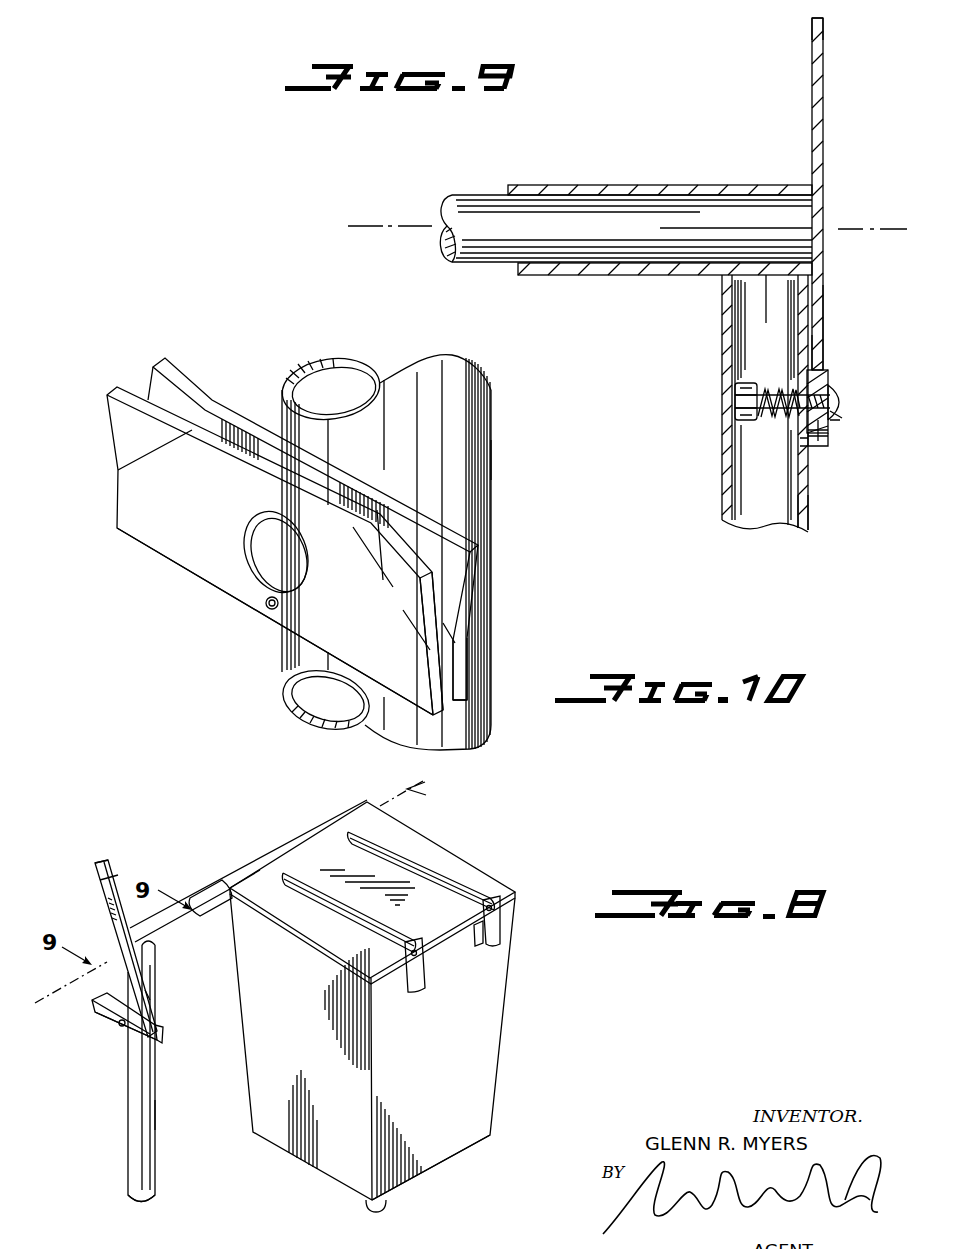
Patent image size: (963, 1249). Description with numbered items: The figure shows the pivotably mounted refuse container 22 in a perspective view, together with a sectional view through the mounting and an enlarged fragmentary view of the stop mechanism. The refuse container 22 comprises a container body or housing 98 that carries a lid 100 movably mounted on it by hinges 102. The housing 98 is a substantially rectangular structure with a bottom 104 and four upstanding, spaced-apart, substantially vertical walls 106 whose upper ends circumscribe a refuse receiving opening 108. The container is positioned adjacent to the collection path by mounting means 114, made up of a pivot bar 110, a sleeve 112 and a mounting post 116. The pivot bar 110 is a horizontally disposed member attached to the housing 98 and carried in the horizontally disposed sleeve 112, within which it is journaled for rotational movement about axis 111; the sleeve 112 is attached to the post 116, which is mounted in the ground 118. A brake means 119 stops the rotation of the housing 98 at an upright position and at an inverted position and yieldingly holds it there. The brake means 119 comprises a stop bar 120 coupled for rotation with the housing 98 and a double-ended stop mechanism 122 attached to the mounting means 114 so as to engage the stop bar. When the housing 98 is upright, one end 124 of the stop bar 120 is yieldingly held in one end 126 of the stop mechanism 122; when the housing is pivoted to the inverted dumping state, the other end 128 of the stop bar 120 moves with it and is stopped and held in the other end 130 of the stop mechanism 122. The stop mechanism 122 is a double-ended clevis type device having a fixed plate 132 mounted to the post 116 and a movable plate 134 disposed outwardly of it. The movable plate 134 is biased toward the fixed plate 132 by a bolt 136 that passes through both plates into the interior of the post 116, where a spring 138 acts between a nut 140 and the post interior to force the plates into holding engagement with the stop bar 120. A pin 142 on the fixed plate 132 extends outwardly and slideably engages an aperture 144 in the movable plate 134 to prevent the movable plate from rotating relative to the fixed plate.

In FIG. 8, the refuse container 22 is at (510, 1010).
In FIG. 8, the container body or housing 98 is at (497, 1055).
In FIG. 8, the lid 100 is at (492, 877).
In FIG. 8, the hinges 102 is at (480, 958).
In FIG. 8, the bottom 104 is at (477, 1145).
In FIG. 8, the vertical walls 106 is at (374, 1205).
In FIG. 8, the refuse receiving opening 108 is at (262, 885).
In FIG. 9, the pivot bar 110 is at (483, 265).
In FIG. 8, the pivot bar 110 is at (312, 828).
In FIG. 9, the axis 111 is at (372, 225).
In FIG. 8, the axis 111 is at (57, 975).
In FIG. 9, the sleeve 112 is at (596, 187).
In FIG. 8, the sleeve 112 is at (212, 890).
In FIG. 9, the mounting means 114 is at (722, 390).
In FIG. 10, the mounting means 114 is at (493, 396).
In FIG. 8, the mounting means 114 is at (157, 1070).
In FIG. 9, the mounting post 116 is at (809, 510).
In FIG. 10, the mounting post 116 is at (492, 472).
In FIG. 8, the mounting post 116 is at (158, 1117).
In FIG. 8, the ground 118 is at (174, 1176).
In FIG. 9, the brake means 119 is at (827, 311).
In FIG. 8, the brake means 119 is at (117, 880).
In FIG. 9, the stop bar 120 is at (825, 133).
In FIG. 8, the stop bar 120 is at (100, 887).
In FIG. 9, the double-ended stop mechanism 122 is at (828, 376).
In FIG. 10, the double-ended stop mechanism 122 is at (232, 602).
In FIG. 8, the double-ended stop mechanism 122 is at (115, 1023).
In FIG. 9, the one end of stop bar 124 is at (823, 353).
In FIG. 8, the one end of stop bar 124 is at (147, 997).
In FIG. 10, the one end of stop mechanism 126 is at (455, 616).
In FIG. 8, the one end of stop mechanism 126 is at (164, 1035).
In FIG. 9, the other end of stop bar 128 is at (825, 48).
In FIG. 8, the other end of stop bar 128 is at (103, 860).
In FIG. 10, the other end of stop mechanism 130 is at (117, 495).
In FIG. 8, the other end of stop mechanism 130 is at (92, 1010).
In FIG. 9, the fixed plate 132 is at (808, 441).
In FIG. 10, the fixed plate 132 is at (247, 420).
In FIG. 9, the movable plate 134 is at (824, 441).
In FIG. 10, the movable plate 134 is at (170, 550).
In FIG. 9, the bolt 136 is at (840, 392).
In FIG. 10, the bolt 136 is at (246, 557).
In FIG. 8, the bolt 136 is at (121, 1028).
In FIG. 9, the spring 138 is at (778, 366).
In FIG. 9, the nut 140 is at (752, 418).
In FIG. 9, the pin 142 is at (838, 418).
In FIG. 10, the pin 142 is at (262, 611).
In FIG. 9, the aperture 144 is at (829, 433).